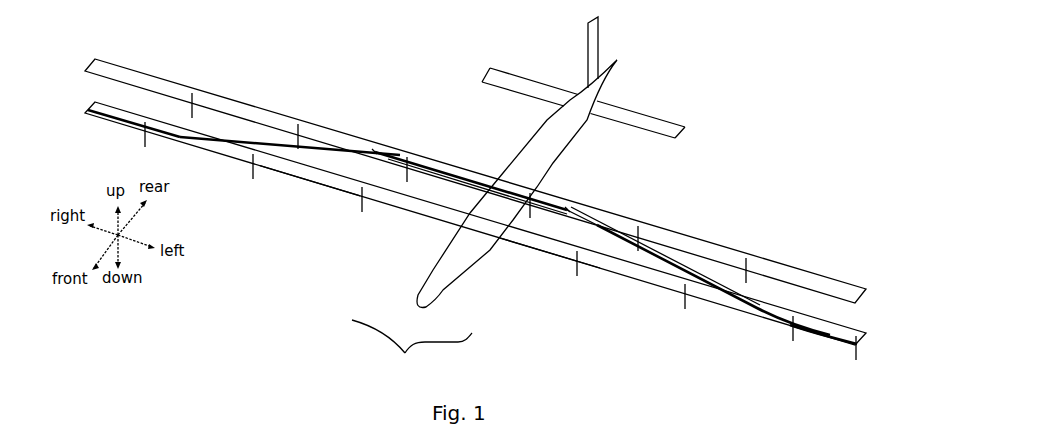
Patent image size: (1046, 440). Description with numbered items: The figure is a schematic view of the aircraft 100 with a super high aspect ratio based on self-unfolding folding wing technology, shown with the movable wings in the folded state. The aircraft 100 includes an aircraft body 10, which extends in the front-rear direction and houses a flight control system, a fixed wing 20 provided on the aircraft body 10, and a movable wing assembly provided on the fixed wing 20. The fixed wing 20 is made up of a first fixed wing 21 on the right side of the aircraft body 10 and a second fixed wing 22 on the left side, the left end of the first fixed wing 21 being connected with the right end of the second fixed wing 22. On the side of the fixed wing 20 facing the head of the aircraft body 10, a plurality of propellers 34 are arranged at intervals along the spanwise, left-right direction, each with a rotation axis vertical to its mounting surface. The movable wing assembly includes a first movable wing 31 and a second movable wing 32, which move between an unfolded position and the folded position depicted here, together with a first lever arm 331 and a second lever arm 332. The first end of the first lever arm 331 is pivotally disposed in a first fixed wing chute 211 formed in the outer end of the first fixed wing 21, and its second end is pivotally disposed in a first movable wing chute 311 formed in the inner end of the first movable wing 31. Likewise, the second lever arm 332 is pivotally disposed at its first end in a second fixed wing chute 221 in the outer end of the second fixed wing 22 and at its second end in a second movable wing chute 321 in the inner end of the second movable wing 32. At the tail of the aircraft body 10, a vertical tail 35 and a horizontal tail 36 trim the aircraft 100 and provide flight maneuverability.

The aircraft 100 is at (723, 75).
The aircraft body 10 is at (525, 162).
The vertical tail 35 is at (598, 38).
The horizontal tail 36 is at (512, 80).
The fixed wing 20 is at (412, 351).
The first fixed wing 21 is at (308, 177).
The second fixed wing 22 is at (548, 247).
The first fixed wing chute 211 is at (125, 128).
The second fixed wing chute 221 is at (808, 323).
The first movable wing 31 is at (257, 110).
The second movable wing 32 is at (710, 243).
The first movable wing chute 311 is at (395, 152).
The second movable wing chute 321 is at (567, 210).
The first lever arm 331 is at (278, 148).
The second lever arm 332 is at (657, 253).
The propeller 34 is at (192, 100).